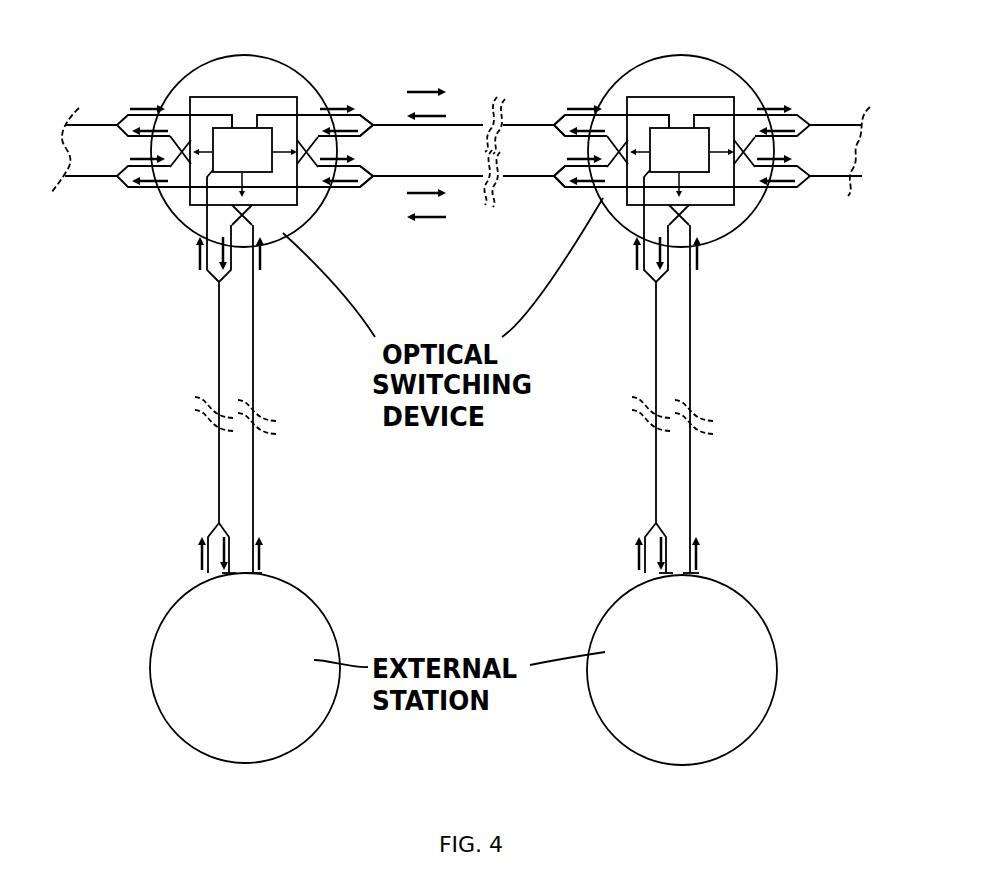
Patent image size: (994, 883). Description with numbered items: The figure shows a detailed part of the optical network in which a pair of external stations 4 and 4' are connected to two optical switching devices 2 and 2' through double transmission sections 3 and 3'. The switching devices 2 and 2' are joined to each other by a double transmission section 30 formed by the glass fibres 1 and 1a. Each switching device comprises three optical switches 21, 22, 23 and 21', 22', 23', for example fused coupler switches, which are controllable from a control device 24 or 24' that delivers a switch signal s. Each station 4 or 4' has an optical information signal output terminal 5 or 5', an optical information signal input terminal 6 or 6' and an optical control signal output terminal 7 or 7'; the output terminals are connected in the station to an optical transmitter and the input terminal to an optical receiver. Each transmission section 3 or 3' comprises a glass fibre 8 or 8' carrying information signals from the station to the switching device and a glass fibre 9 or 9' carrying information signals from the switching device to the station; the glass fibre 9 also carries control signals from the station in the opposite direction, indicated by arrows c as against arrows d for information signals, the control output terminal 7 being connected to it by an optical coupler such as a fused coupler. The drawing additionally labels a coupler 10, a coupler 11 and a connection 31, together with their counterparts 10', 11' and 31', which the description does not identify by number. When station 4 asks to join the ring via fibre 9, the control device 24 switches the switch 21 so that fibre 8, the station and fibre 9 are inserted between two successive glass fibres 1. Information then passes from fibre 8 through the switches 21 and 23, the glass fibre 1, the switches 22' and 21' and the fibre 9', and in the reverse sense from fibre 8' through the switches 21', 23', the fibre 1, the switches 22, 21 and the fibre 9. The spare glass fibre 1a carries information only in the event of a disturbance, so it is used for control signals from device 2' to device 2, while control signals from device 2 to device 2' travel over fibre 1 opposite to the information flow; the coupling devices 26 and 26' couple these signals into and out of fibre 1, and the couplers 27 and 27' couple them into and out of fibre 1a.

The glass fibre 1 is at (85, 124).
The glass fibre 1a is at (82, 177).
The optical switching device 2 is at (245, 151).
The optical switch 21 is at (290, 229).
The optical switch 22 is at (315, 102).
The optical switch 23 is at (172, 103).
The control device 24 is at (245, 167).
The coupling device 26 is at (383, 98).
The coupler 27 is at (380, 205).
The double transmission section 30 is at (452, 150).
The connecting fiber 31 is at (257, 74).
The optical coupler 11 is at (220, 245).
The glass fibre 9 is at (203, 402).
The glass fibre 8 is at (270, 399).
The double transmission section 3 is at (258, 471).
The optical coupler 10 is at (196, 521).
The optical control signal output terminal 7 is at (207, 569).
The optical information signal input terminal 6 is at (218, 604).
The optical information signal output terminal 5 is at (265, 605).
The external station 4 is at (245, 668).
The optical switching device 2' is at (682, 151).
The optical switch 21' is at (728, 231).
The optical switch 22' is at (753, 102).
The optical switch 23' is at (605, 103).
The control device 24' is at (682, 167).
The coupler 26' is at (542, 98).
The coupling device 27' is at (542, 206).
The connecting fiber 31' is at (693, 73).
The optical coupler 11' is at (656, 245).
The glass fibre 9' is at (639, 402).
The glass fibre 8' is at (709, 399).
The double transmission section 3' is at (697, 471).
The optical coupler 10' is at (632, 521).
The optical control signal output terminal 7' is at (643, 569).
The optical information signal input terminal 6' is at (654, 604).
The optical information signal output terminal 5' is at (704, 605).
The external station 4' is at (682, 670).